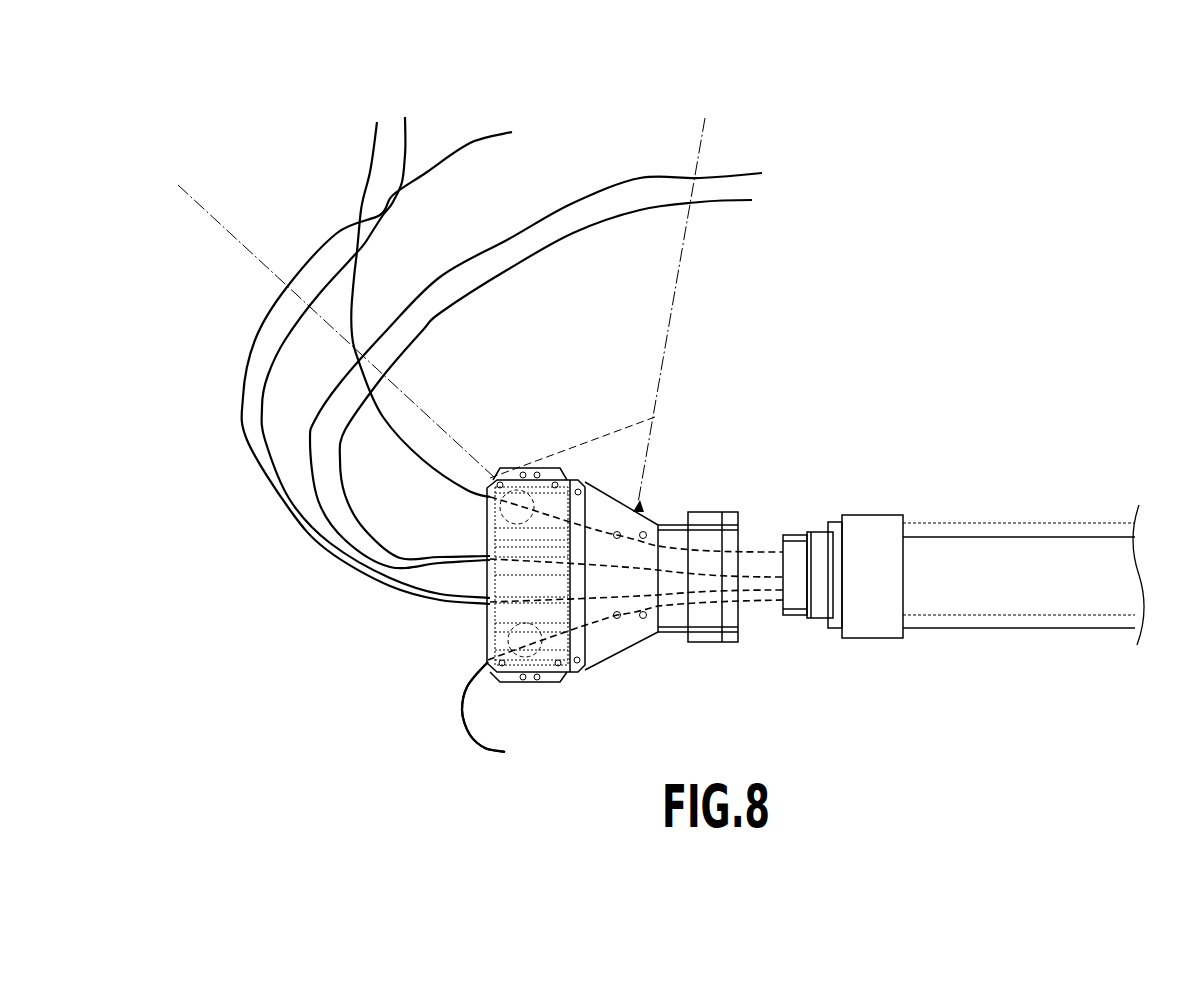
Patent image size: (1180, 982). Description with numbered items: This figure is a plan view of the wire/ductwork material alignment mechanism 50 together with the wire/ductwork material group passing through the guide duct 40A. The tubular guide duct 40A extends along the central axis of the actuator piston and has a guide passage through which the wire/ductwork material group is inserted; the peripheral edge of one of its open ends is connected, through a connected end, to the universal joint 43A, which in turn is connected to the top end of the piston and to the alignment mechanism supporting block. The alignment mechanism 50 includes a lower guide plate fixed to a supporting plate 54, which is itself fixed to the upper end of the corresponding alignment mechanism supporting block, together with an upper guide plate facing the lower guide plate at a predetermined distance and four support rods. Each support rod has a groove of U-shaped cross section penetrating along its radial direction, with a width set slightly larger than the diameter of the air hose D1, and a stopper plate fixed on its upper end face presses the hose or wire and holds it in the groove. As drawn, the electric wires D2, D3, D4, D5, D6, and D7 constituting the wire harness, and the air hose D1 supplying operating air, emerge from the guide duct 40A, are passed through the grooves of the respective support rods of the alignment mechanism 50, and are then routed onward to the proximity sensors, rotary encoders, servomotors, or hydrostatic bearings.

The air hose D1 is at (421, 466).
The electric wire D2 is at (336, 234).
The electric wire D3 is at (408, 142).
The electric wire D4 is at (640, 178).
The electric wire D5 is at (639, 211).
The electric wire D6 is at (484, 751).
The electric wire D7 is at (488, 732).
The wire/ductwork material alignment mechanism 50 is at (487, 632).
The supporting plate 54 is at (622, 640).
The universal joint 43A is at (727, 563).
The guide duct 40A is at (1097, 558).